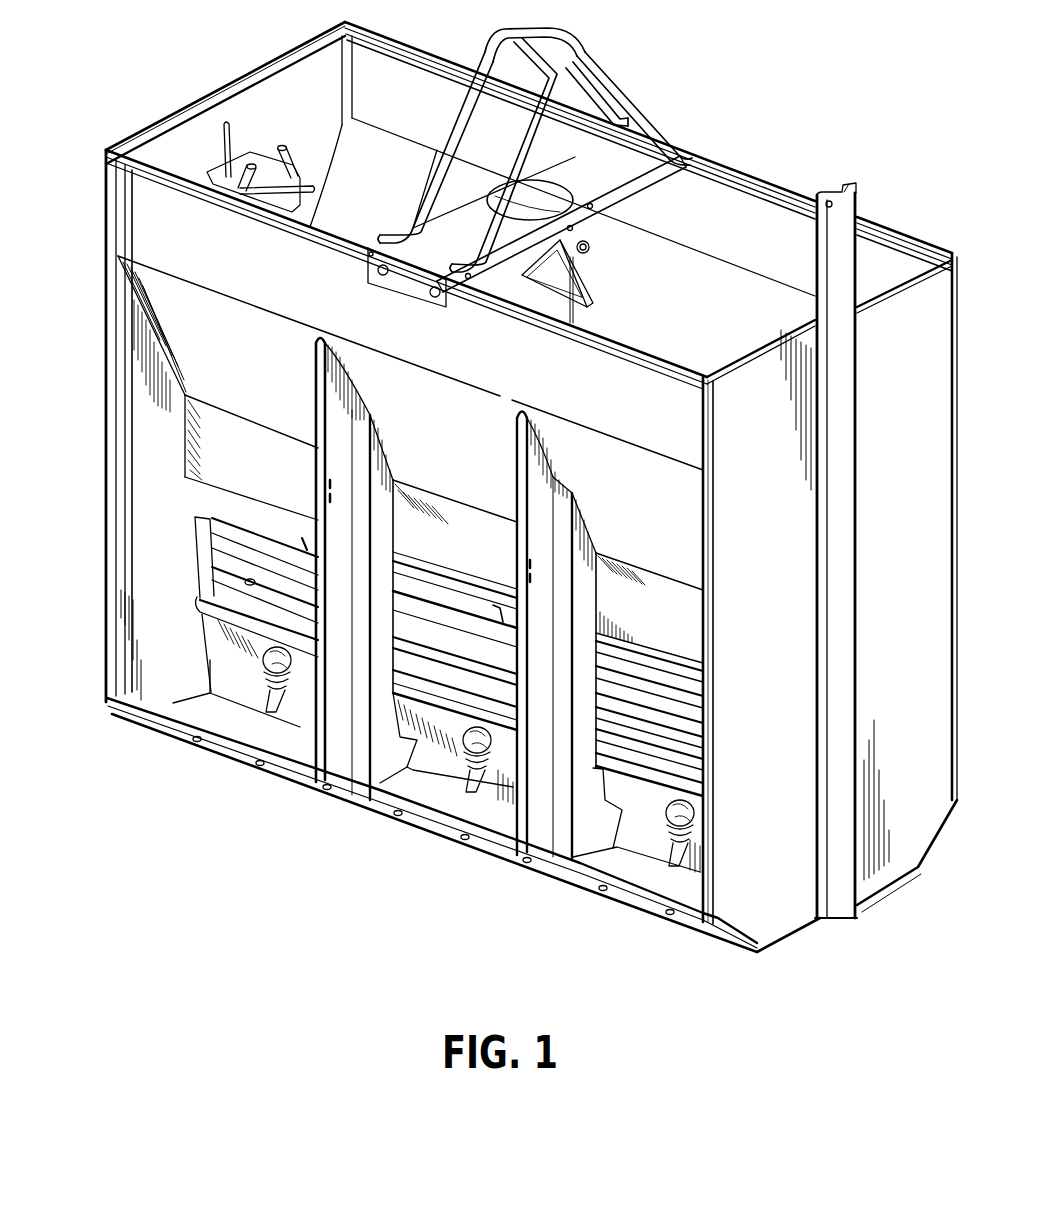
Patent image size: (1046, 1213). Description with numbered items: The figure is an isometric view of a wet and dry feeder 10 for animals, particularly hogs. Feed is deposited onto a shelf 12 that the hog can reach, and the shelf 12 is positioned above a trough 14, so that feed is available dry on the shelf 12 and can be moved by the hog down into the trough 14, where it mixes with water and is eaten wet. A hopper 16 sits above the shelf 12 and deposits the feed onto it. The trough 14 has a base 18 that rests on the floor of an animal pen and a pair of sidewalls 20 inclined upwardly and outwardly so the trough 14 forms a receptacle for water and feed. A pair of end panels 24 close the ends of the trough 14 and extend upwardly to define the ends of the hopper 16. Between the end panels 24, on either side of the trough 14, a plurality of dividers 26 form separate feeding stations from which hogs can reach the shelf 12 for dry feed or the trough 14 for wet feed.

The wet and dry feeder 10 is at (708, 90).
The shelf 12 is at (440, 706).
The trough 14 is at (620, 885).
The hopper 16 is at (760, 183).
The base 18 is at (793, 940).
The sidewalls 20 is at (179, 727).
The end panels 24 is at (103, 381).
The dividers 26 is at (317, 687).